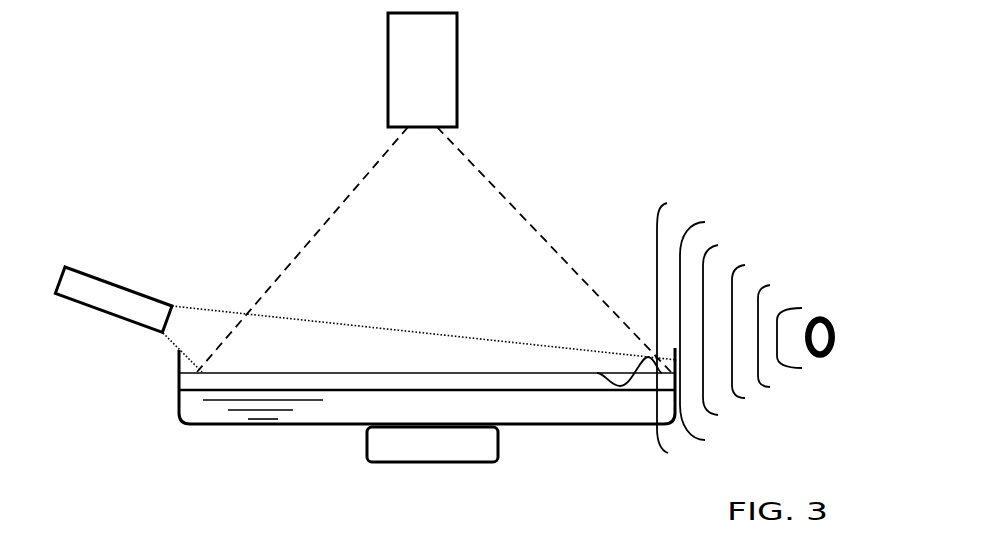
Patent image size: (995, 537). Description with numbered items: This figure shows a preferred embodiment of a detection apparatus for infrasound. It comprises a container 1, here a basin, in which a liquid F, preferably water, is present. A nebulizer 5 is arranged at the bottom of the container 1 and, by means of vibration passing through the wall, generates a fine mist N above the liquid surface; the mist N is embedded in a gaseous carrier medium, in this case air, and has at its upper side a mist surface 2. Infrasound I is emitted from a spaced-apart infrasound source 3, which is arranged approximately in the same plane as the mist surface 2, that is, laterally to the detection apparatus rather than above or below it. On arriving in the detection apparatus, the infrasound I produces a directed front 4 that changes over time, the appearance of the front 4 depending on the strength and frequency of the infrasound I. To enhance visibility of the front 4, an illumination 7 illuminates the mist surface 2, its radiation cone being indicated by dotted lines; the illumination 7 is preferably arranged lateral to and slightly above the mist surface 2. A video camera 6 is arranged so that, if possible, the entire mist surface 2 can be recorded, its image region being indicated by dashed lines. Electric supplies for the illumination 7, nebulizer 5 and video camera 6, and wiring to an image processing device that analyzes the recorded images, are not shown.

The container 1 is at (178, 417).
The mist surface 2 is at (323, 372).
The infrasound source 3 is at (830, 318).
The front 4 is at (628, 345).
The nebulizer 5 is at (393, 450).
The video camera 6 is at (393, 62).
The illumination 7 is at (86, 278).
The mist N is at (282, 380).
The liquid F is at (385, 417).
The infrasound I is at (742, 216).